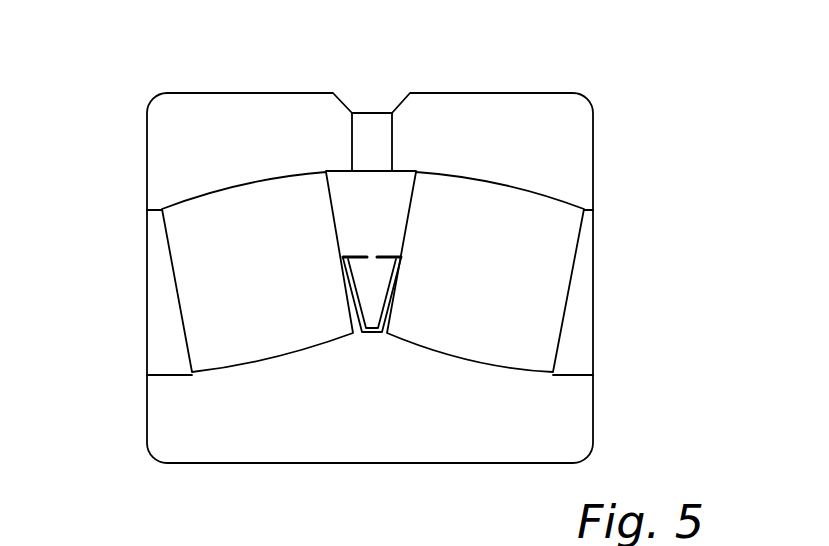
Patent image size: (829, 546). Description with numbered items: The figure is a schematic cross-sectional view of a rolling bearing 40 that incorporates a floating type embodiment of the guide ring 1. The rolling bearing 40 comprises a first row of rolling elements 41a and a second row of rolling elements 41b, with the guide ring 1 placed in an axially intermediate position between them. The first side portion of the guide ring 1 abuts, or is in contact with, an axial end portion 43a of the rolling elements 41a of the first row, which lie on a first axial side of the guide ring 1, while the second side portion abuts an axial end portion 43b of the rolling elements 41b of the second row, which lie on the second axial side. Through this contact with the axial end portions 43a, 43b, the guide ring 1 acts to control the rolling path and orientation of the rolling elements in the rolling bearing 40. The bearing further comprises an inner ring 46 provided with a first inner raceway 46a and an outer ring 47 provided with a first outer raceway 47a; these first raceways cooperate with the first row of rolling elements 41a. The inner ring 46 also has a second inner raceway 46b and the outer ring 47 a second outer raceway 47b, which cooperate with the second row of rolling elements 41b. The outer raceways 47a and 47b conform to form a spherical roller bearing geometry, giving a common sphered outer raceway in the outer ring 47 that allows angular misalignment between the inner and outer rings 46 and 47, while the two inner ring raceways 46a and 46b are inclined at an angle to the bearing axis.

The guide ring 1 is at (305, 257).
The rolling bearing 40 is at (137, 76).
The first row of rolling elements 41a is at (195, 256).
The second row of rolling elements 41b is at (543, 248).
The axial end portion of the rolling elements of the first row 43a is at (347, 275).
The axial end portion of the rolling elements of the second row 43b is at (392, 288).
The inner ring 46 is at (165, 427).
The first inner raceway 46a is at (235, 363).
The second inner raceway 46b is at (475, 363).
The outer ring 47 is at (165, 124).
The first outer raceway 47a is at (243, 183).
The second outer raceway 47b is at (495, 182).